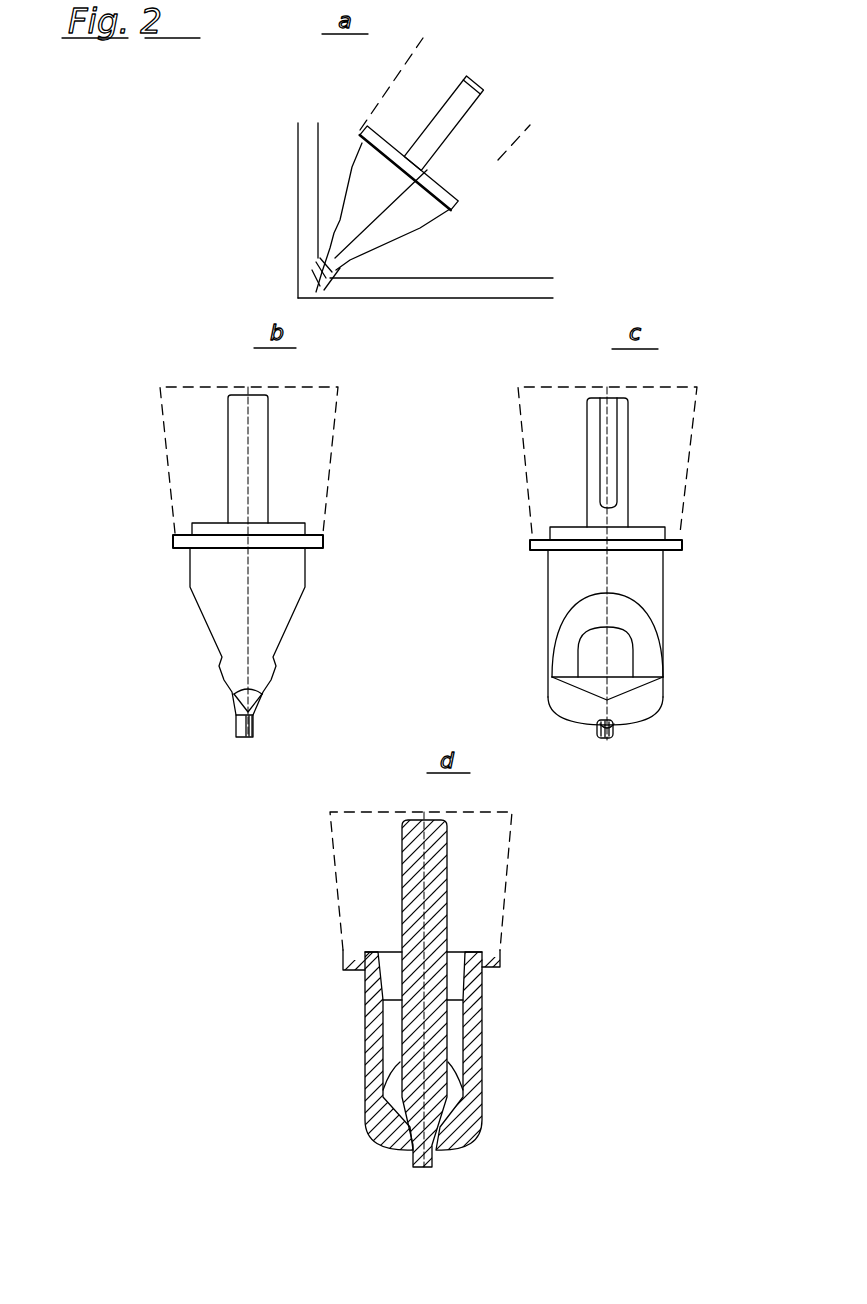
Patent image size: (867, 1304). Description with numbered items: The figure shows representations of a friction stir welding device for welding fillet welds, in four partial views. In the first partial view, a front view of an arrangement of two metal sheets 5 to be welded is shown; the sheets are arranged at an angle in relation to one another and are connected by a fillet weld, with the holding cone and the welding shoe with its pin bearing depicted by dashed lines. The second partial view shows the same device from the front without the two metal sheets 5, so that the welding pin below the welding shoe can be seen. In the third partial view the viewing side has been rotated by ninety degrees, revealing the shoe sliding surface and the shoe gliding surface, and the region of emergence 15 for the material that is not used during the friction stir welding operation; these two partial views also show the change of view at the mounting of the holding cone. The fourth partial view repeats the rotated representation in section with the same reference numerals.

The metal sheets 5 is at (298, 243).
The region of emergence 15 is at (615, 685).